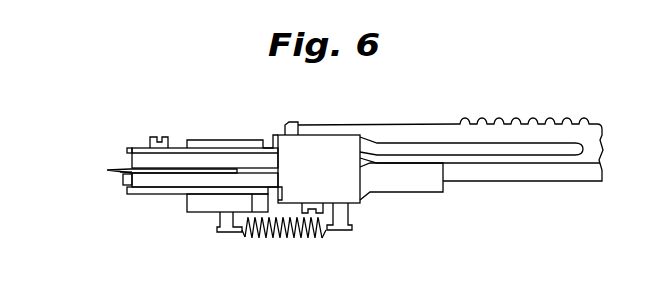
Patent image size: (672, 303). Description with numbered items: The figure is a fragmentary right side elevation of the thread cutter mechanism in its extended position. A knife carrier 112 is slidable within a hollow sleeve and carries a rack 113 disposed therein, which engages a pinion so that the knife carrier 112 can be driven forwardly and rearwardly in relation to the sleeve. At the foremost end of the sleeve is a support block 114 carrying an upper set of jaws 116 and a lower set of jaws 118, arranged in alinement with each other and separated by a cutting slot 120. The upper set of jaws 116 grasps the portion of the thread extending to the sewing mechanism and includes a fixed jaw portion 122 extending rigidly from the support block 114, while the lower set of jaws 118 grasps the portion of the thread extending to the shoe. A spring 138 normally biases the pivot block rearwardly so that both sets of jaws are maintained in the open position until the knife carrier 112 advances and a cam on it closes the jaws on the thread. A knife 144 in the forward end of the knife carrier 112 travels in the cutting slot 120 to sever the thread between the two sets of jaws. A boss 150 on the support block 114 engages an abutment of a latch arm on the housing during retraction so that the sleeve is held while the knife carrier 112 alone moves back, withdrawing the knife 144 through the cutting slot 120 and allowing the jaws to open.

The knife carrier 112 is at (403, 130).
The rack 113 is at (512, 120).
The support block 114 is at (328, 145).
The upper set of jaws 116 is at (128, 158).
The lower set of jaws 118 is at (143, 190).
The cutting slot 120 is at (200, 168).
The fixed jaw portion 122 is at (143, 148).
The spring 138 is at (305, 240).
The knife 144 is at (120, 172).
The boss 150 is at (309, 122).